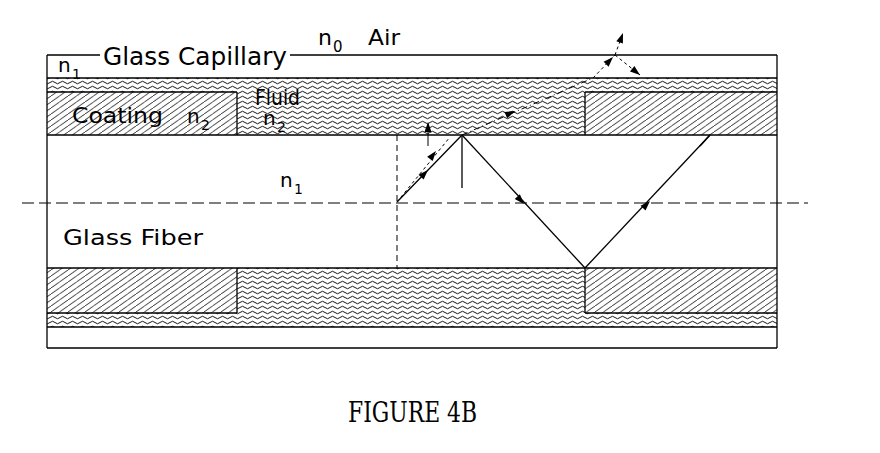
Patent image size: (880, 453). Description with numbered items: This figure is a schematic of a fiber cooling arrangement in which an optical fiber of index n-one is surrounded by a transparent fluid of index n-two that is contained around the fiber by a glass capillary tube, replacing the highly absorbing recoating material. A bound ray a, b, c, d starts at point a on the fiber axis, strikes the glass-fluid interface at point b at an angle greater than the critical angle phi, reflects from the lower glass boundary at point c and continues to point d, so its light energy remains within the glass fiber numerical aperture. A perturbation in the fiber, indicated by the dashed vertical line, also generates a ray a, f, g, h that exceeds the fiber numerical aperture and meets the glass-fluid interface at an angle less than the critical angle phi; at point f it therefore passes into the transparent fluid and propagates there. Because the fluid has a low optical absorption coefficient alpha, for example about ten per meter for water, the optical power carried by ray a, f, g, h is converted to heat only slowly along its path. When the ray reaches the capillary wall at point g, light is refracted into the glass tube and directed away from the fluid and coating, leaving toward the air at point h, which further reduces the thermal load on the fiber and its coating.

The ray origin point a is at (429, 178).
The incidence point of bound ray b is at (525, 173).
The reflection point of bound ray c is at (644, 201).
The exit point of bound ray d is at (715, 152).
The refraction point of perturbation ray f is at (425, 137).
The incidence point at capillary tube g is at (608, 64).
The exit point into air h is at (609, 40).
The optical absorption coefficient alpha is at (432, 100).
The critical angle phi is at (449, 164).